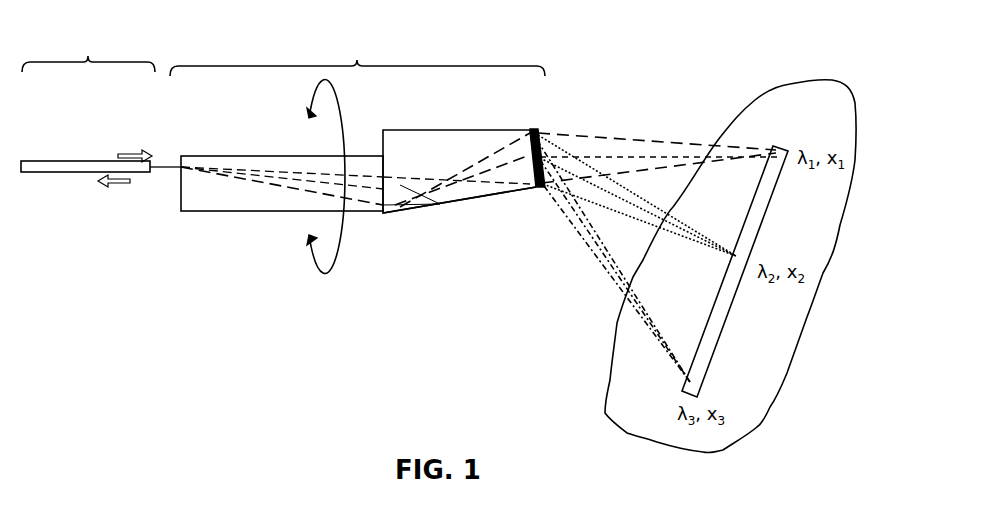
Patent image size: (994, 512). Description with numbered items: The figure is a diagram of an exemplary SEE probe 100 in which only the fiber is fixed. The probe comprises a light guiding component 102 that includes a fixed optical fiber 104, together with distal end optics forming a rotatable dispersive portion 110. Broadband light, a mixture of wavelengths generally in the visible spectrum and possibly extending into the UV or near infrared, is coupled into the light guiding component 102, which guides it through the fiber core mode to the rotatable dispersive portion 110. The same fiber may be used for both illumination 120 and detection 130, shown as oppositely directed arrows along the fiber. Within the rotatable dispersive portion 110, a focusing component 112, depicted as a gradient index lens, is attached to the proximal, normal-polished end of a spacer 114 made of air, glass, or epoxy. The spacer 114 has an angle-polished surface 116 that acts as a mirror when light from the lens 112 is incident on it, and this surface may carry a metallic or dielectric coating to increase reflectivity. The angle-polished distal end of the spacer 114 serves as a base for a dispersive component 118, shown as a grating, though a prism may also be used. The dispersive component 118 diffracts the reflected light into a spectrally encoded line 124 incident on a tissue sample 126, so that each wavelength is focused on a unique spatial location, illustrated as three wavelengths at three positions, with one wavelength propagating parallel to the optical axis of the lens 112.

The SEE probe 100 is at (657, 5).
The light guiding component 102 is at (88, 40).
The optical fiber 104 is at (65, 161).
The rotatable dispersive portion 110 is at (357, 48).
The focusing component 112 is at (282, 176).
The spacer 114 is at (459, 158).
The angle-polished surface 116 is at (440, 206).
The dispersive component 118 is at (533, 128).
The illumination 120 is at (127, 140).
The spectrally encoded line 124 is at (690, 348).
The tissue sample 126 is at (730, 255).
The detection 130 is at (118, 196).